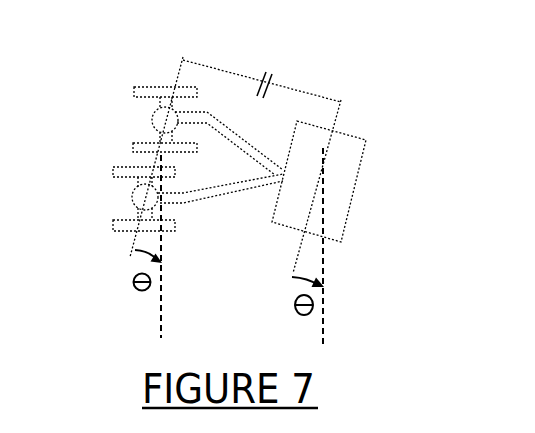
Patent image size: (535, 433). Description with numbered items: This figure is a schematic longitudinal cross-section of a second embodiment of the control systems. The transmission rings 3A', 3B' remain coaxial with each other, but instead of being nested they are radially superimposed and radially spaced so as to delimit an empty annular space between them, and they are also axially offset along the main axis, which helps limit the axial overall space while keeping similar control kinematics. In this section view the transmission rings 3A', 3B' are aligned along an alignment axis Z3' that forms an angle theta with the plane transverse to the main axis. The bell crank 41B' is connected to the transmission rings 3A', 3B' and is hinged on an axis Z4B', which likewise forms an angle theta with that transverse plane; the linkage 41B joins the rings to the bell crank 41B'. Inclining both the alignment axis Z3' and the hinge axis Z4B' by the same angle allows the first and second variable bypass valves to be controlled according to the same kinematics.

The transmission ring 3A' is at (158, 84).
The transmission ring 3B' is at (112, 219).
The alignment axis Z3' is at (166, 142).
The hinge axis Z4B' is at (331, 168).
The link arms 41B is at (220, 202).
The bell crank 41B' is at (376, 181).